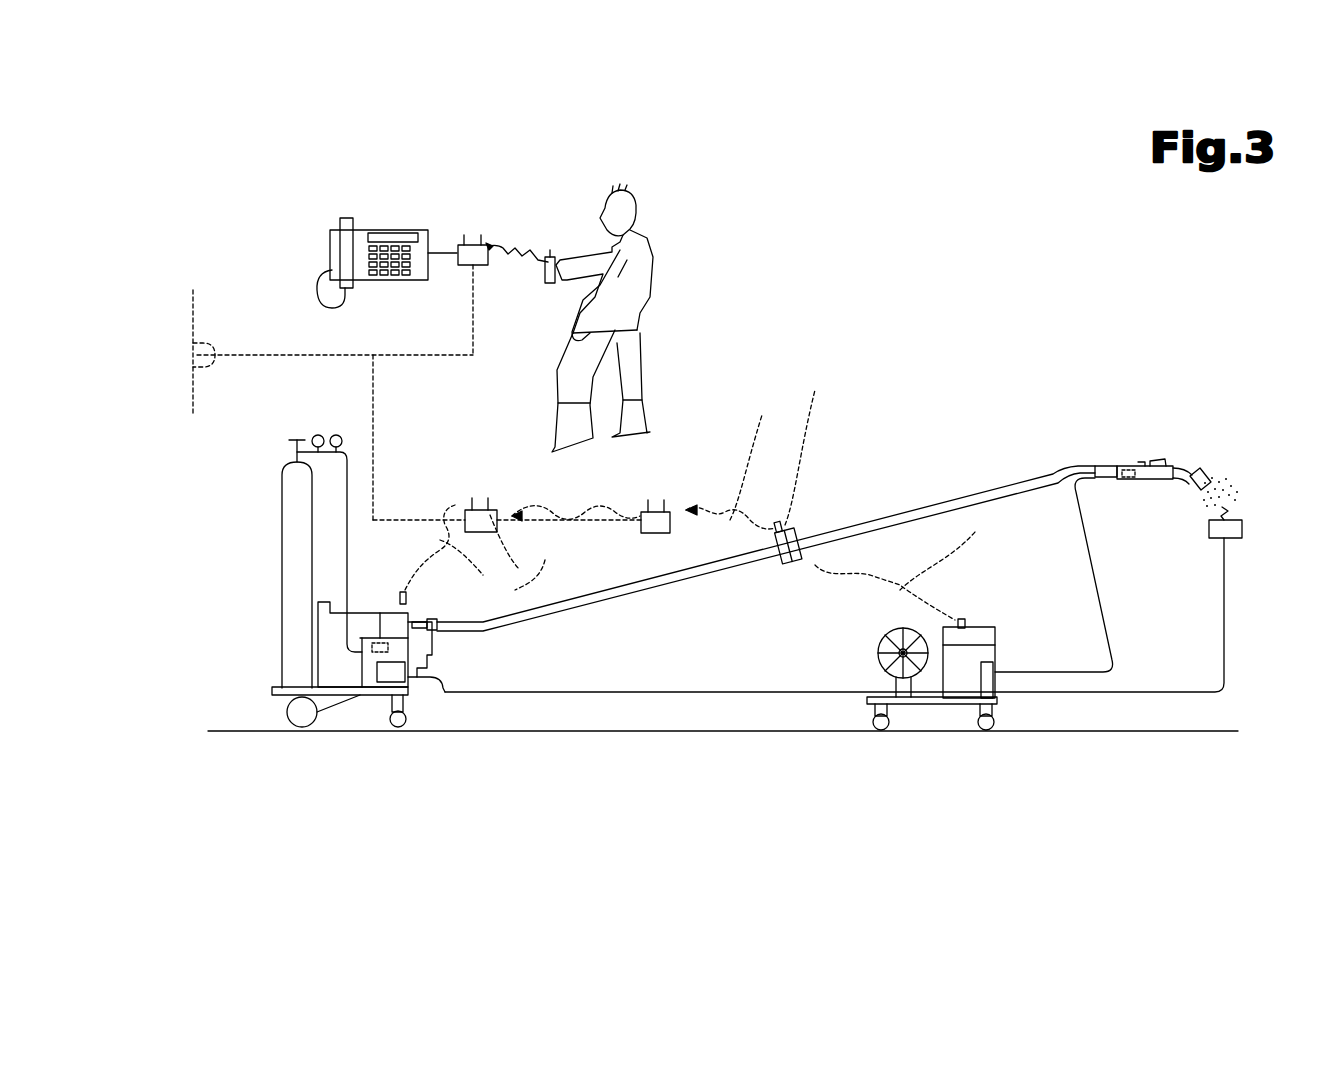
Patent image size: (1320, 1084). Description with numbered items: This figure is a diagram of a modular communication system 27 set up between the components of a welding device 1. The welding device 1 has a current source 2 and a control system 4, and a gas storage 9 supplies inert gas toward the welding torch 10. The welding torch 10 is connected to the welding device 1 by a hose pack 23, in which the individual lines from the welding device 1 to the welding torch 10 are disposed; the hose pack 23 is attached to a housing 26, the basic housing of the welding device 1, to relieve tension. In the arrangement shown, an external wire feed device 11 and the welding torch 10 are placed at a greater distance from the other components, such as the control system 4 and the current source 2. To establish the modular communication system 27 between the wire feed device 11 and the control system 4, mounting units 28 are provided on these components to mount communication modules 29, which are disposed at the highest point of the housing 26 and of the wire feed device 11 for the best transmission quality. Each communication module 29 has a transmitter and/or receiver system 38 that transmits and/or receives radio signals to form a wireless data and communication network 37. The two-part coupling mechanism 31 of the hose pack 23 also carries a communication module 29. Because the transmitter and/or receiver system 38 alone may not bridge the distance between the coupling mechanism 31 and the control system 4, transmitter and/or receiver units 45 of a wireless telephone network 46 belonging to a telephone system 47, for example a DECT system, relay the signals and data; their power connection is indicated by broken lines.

The welding device 1 is at (258, 497).
The current source 2 is at (335, 716).
The control system 4 is at (368, 672).
The gas storage 9 is at (290, 622).
The welding torch 10 is at (1141, 462).
The wire feed device 11 is at (932, 720).
The hose pack 23 is at (470, 634).
The housing 26 is at (418, 693).
The modular communication system 27 is at (626, 568).
The mounting units 28 is at (399, 588).
The communication modules 29 is at (403, 592).
The coupling mechanism 31 is at (790, 585).
The wireless data and communication network 37 is at (440, 528).
The transmitter and/or receiver system 38 is at (802, 525).
The transmitter and/or receiver units 45 is at (471, 240).
The wireless telephone network 46 is at (522, 243).
The telephone system 47 is at (345, 260).